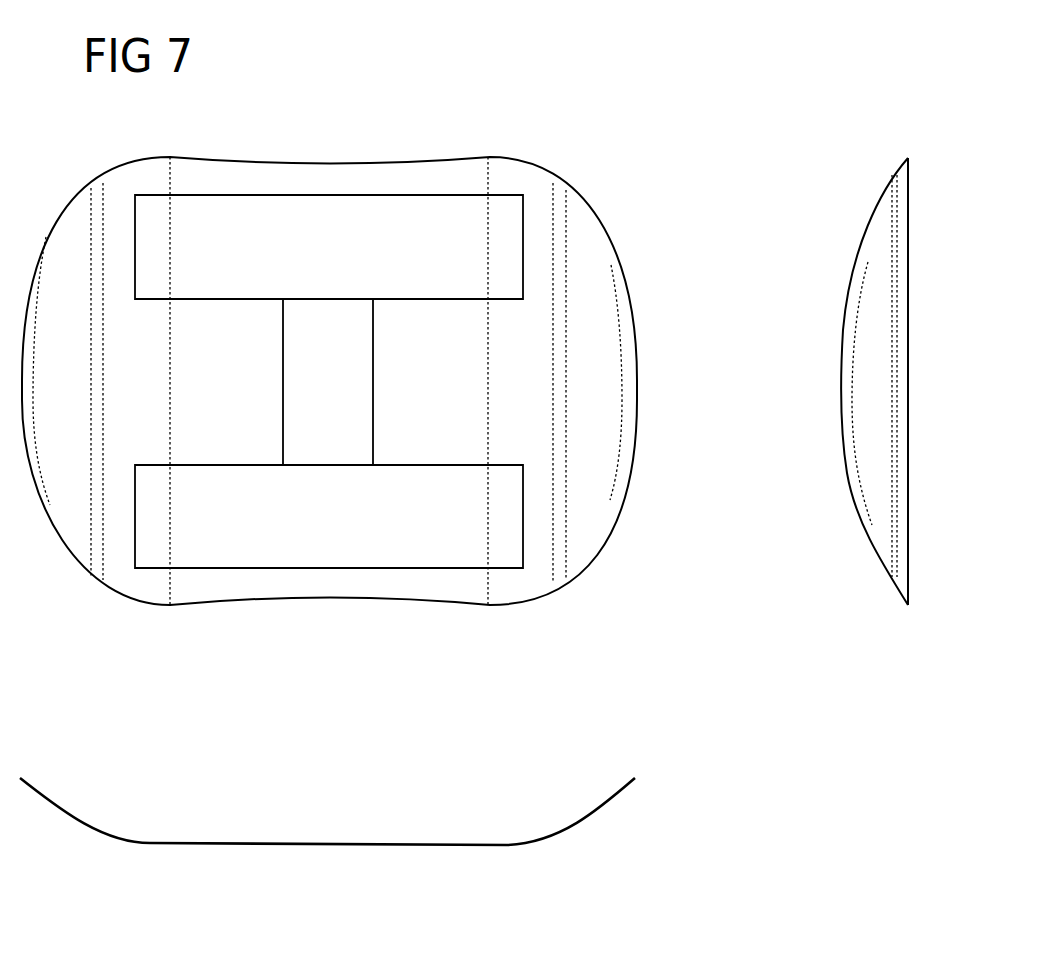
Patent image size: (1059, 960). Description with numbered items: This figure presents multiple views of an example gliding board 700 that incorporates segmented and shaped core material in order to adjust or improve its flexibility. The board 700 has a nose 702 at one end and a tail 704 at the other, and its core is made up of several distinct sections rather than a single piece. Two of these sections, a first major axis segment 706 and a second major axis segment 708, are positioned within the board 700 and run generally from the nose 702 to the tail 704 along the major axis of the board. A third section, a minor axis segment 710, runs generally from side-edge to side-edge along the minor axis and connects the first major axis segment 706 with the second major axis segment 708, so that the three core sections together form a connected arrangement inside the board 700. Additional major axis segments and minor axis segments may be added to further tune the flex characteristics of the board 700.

The board 700 is at (464, 475).
The nose 702 is at (52, 543).
The tail 704 is at (627, 265).
The first major axis segment 706 is at (332, 227).
The second major axis segment 708 is at (368, 540).
The minor axis segment 710 is at (353, 382).